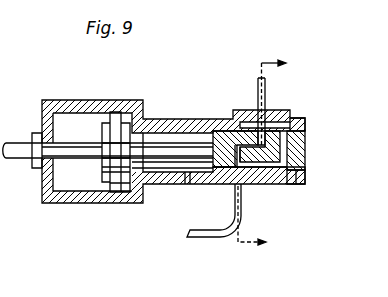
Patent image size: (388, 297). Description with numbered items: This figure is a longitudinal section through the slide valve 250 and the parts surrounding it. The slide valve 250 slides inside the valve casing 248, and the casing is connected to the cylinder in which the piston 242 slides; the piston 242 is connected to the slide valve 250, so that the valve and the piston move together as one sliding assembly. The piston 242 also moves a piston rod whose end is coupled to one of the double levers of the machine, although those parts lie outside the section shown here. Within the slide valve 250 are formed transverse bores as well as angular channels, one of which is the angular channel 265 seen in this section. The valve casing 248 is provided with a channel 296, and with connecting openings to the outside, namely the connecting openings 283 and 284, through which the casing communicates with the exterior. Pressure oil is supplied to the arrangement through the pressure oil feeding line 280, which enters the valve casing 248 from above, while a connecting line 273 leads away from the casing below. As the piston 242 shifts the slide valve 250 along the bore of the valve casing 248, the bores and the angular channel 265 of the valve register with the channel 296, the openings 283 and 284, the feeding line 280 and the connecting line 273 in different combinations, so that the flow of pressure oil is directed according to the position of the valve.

The piston 242 is at (118, 135).
The slide valve 250 is at (152, 147).
The valve casing 248 is at (222, 123).
The pressure oil feeding line 280 is at (266, 106).
The channel 296 is at (294, 116).
The connecting opening to the outside 284 is at (290, 185).
The angular channel 265 is at (256, 185).
The connecting opening to the outside 283 is at (187, 175).
The connecting line 273 is at (193, 234).